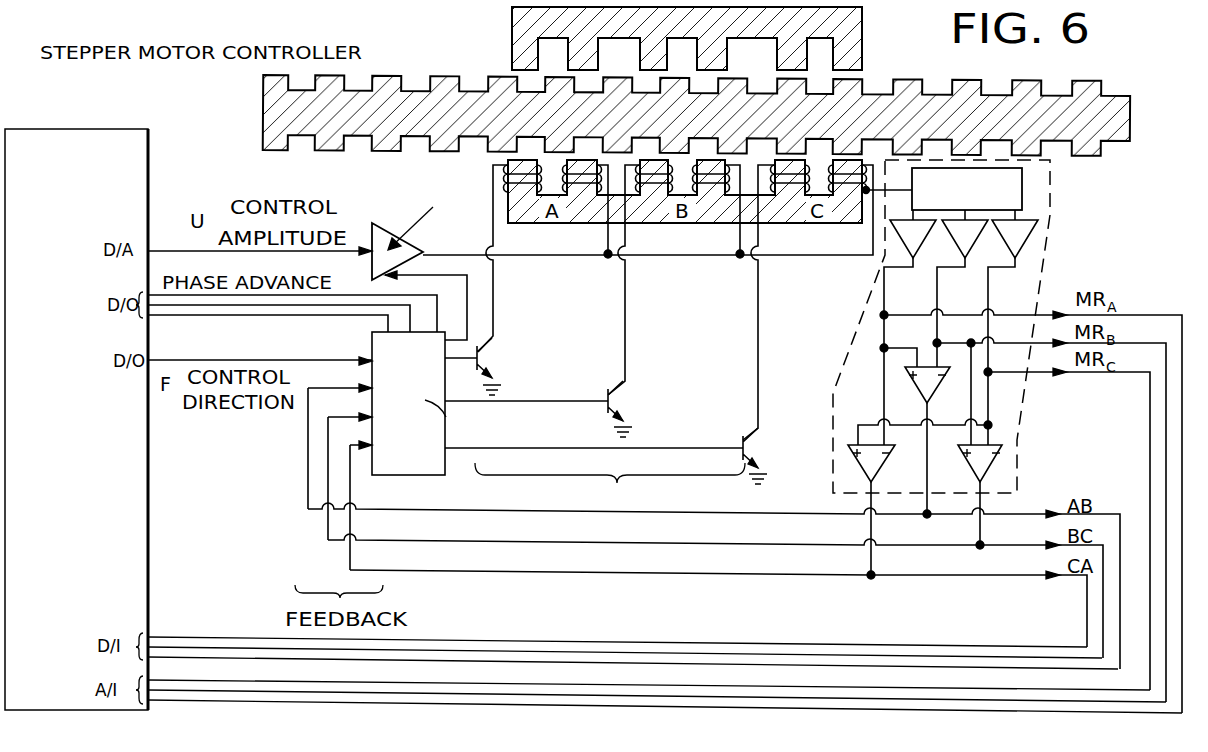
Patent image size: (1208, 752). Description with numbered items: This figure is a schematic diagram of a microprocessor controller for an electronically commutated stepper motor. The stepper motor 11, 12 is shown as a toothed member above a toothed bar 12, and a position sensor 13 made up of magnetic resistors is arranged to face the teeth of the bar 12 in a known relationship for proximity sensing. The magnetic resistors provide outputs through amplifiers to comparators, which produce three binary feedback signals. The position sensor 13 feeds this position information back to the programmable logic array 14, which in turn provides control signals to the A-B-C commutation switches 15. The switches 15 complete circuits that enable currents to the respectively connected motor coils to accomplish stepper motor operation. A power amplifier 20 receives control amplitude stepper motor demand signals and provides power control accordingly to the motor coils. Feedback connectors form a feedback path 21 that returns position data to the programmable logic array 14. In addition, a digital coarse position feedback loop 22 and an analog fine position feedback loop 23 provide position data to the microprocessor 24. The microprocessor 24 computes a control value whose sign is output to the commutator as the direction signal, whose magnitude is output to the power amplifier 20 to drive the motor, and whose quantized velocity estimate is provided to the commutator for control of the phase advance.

The stepper motor 11 is at (862, 31).
The bar 12 is at (1112, 100).
The position sensor 13 is at (1052, 212).
The programmable logic array 14 is at (387, 477).
The A-B-C commutation switches 15 is at (667, 474).
The power amplifier 20 is at (386, 226).
The feedback path 21 is at (816, 507).
The digital coarse position feedback loop 22 is at (881, 636).
The analog fine position feedback loop 23 is at (967, 681).
The microprocessor 24 is at (149, 527).